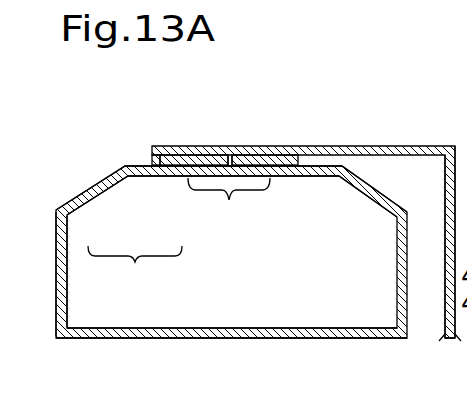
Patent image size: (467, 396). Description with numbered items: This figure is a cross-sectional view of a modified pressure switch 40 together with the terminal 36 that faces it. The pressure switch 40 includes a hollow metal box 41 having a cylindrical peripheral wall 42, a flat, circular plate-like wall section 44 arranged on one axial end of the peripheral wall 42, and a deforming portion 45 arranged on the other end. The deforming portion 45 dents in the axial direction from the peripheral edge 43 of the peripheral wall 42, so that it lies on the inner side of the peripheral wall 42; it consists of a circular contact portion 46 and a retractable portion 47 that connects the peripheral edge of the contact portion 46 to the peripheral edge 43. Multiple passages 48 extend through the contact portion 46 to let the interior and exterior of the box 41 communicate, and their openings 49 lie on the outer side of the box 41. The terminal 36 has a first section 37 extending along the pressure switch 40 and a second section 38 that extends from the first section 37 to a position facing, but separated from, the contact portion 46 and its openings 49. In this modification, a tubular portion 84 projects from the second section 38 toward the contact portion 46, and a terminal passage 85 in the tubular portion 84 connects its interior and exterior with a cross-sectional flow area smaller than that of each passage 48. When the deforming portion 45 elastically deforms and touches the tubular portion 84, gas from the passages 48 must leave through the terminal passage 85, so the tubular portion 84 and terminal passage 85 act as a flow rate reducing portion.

The terminal 36 is at (441, 150).
The first section 37 is at (440, 322).
The second section 38 is at (387, 151).
The pressure switch 40 is at (60, 207).
The box 41 is at (56, 270).
The peripheral wall 42 is at (62, 305).
The peripheral edge 43 is at (392, 211).
The wall section 44 is at (225, 338).
The deforming portion 45 is at (135, 274).
The contact portion 46 is at (152, 177).
The retractable portion 47 is at (97, 188).
The passages 48 is at (229, 208).
The openings 49 is at (188, 155).
The tubular portion 84 is at (152, 155).
The terminal passage 85 is at (230, 155).